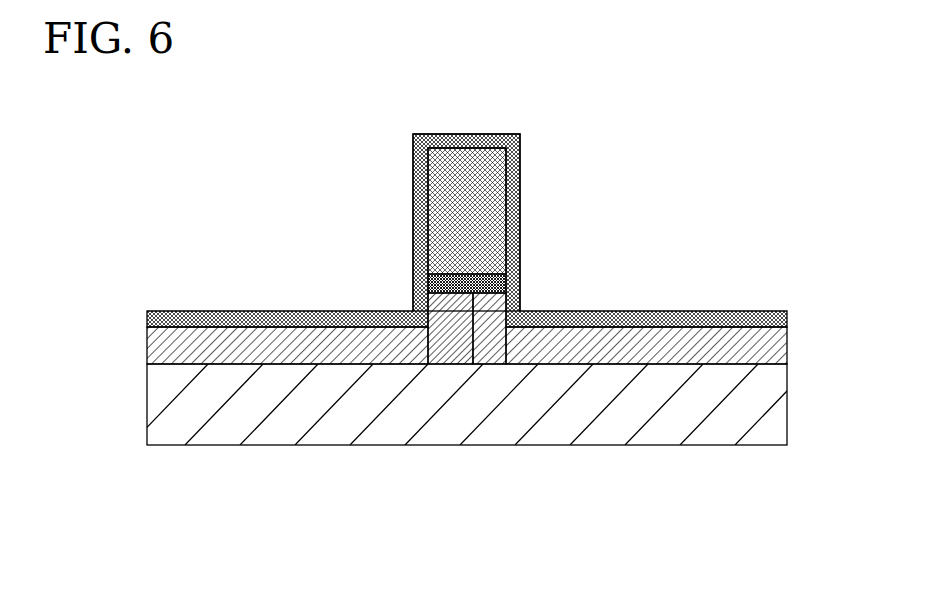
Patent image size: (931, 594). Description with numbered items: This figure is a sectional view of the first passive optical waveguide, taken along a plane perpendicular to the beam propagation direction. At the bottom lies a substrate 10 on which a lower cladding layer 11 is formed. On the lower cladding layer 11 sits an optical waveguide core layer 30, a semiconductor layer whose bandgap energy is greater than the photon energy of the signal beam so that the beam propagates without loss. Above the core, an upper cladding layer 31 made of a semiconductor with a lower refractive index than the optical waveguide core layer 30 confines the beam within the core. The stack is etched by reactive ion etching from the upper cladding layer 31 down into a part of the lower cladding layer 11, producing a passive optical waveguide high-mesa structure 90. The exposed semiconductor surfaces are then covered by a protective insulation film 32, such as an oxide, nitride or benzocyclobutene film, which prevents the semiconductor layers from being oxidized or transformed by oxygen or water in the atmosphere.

The substrate 10 is at (280, 417).
The lower cladding layer 11 is at (165, 347).
The optical waveguide core layer 30 is at (473, 295).
The upper cladding layer 31 is at (450, 207).
The protective insulation film 32 is at (262, 313).
The passive optical waveguide high-mesa structure 90 is at (480, 98).